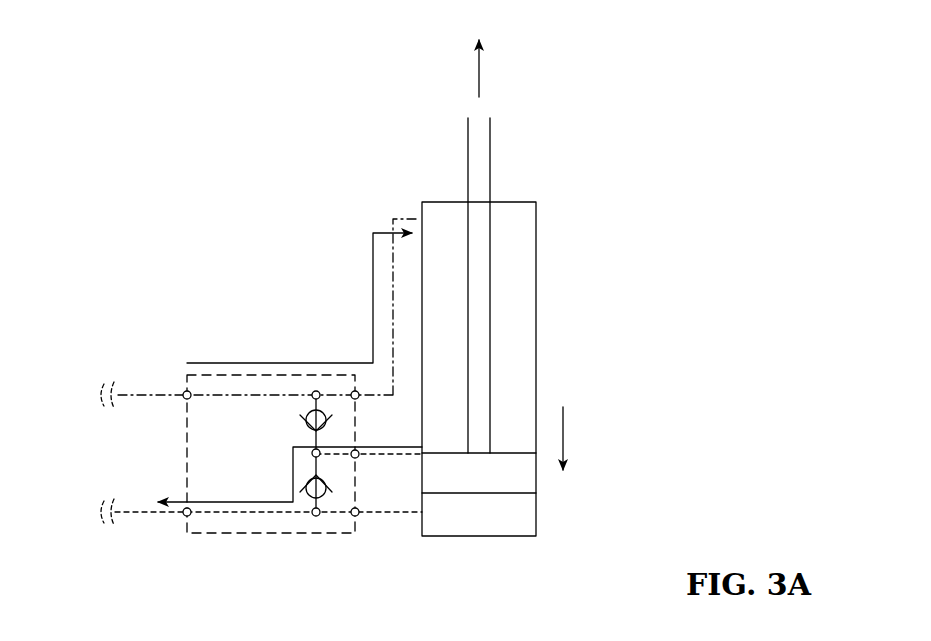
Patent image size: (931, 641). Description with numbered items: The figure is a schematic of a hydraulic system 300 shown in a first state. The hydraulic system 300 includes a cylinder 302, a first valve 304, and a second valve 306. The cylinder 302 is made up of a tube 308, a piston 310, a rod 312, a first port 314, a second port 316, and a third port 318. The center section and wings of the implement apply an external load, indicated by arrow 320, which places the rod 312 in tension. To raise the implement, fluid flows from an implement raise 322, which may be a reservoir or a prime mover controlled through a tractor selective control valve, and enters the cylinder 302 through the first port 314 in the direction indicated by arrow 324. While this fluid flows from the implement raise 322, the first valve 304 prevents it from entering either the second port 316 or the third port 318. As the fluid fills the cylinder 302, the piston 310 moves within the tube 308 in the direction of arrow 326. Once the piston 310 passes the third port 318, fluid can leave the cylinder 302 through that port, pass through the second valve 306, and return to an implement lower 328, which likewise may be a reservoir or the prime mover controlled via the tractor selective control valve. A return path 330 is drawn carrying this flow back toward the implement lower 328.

The hydraulic system 300 is at (150, 148).
The actuator assembly 302 is at (660, 276).
The first check valve 304 is at (313, 417).
The second check valve 306 is at (313, 490).
The cylinder 308 is at (537, 233).
The piston 310 is at (515, 483).
The piston rod 312 is at (478, 307).
The first fluid passage 314 is at (422, 218).
The second fluid passage 316 is at (422, 513).
The third fluid passage 318 is at (422, 450).
The rod extension direction 320 is at (479, 77).
The first port 322 is at (100, 388).
The supply line 324 is at (372, 288).
The piston movement direction 326 is at (563, 448).
The second port 328 is at (100, 518).
The return line 330 is at (207, 502).